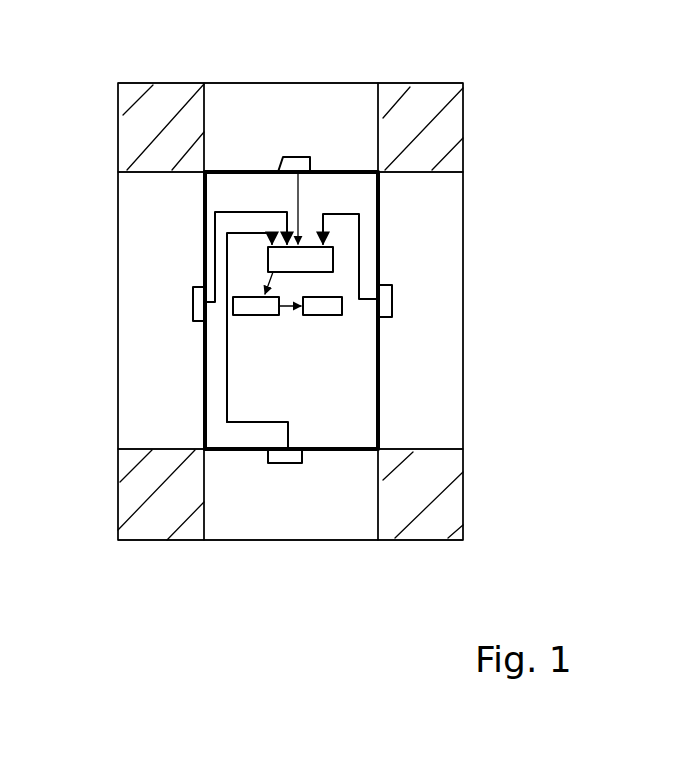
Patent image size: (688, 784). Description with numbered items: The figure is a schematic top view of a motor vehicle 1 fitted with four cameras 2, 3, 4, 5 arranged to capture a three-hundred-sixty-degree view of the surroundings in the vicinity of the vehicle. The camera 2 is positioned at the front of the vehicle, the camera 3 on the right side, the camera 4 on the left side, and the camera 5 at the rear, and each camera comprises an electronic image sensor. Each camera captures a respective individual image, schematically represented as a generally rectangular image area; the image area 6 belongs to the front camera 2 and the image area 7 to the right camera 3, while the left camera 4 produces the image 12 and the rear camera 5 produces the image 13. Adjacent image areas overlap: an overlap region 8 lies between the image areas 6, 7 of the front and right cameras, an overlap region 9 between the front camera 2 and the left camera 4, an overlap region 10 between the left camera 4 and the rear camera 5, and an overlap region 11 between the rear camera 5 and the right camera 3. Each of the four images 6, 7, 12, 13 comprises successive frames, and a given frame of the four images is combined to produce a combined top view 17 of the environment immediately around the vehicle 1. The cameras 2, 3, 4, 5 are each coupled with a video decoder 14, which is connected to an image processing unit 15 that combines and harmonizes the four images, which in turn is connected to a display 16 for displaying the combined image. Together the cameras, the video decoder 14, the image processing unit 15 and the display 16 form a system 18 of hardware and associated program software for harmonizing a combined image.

The motor vehicle 1 is at (297, 386).
The camera 2 is at (302, 157).
The camera 3 is at (392, 293).
The camera 4 is at (192, 300).
The camera 5 is at (290, 463).
The image area 6 is at (277, 95).
The image area 7 is at (450, 303).
The overlap region 8 is at (452, 98).
The overlap region 9 is at (152, 97).
The overlap region 10 is at (160, 527).
The overlap region 11 is at (453, 512).
The image 12 is at (128, 358).
The image 13 is at (317, 527).
The video decoder 14 is at (268, 262).
The image processing unit 15 is at (250, 313).
The display 16 is at (323, 315).
The combined top view 17 is at (494, 169).
The system 18 is at (203, 399).